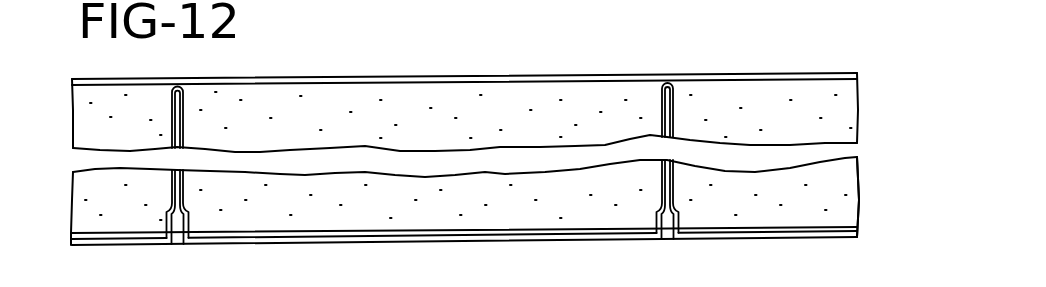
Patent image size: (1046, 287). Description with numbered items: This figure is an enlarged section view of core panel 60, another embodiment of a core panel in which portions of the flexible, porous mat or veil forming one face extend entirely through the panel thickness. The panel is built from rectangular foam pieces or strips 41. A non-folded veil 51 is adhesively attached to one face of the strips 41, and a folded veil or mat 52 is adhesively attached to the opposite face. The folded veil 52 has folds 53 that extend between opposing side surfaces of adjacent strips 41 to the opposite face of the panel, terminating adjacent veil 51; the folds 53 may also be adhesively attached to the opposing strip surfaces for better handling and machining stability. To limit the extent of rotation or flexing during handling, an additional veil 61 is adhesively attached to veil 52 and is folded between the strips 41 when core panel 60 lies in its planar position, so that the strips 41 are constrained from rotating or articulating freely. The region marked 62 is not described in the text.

The core panel 60 is at (443, 72).
The panel joint region 62 is at (791, 5).
The foam strips 41 is at (538, 105).
The non-folded veil 51 is at (817, 72).
The folded veil 52 is at (833, 222).
The folds 53 is at (182, 108).
The veil 61 is at (786, 238).